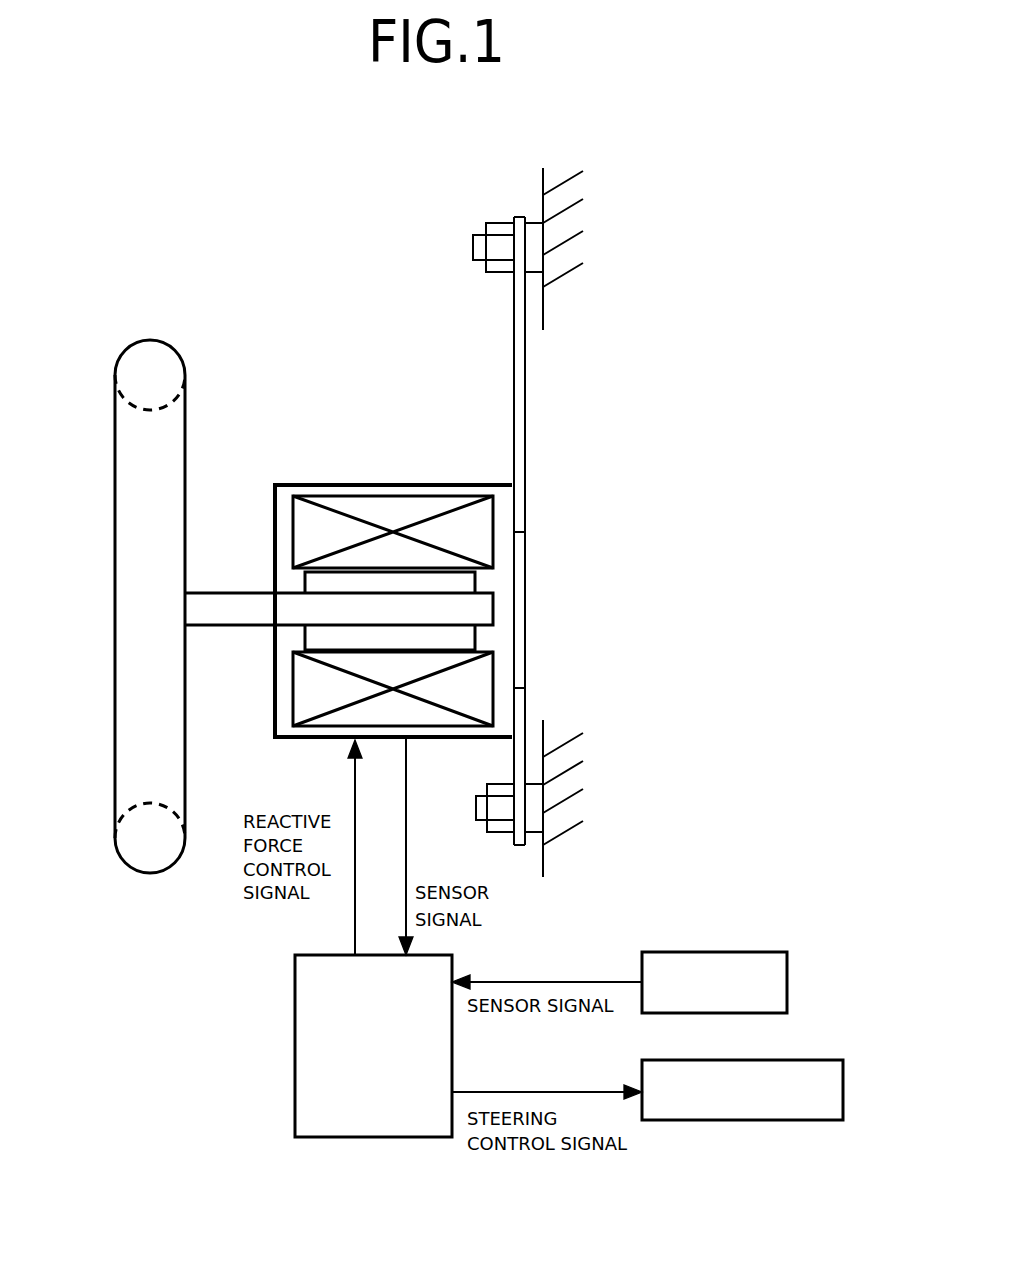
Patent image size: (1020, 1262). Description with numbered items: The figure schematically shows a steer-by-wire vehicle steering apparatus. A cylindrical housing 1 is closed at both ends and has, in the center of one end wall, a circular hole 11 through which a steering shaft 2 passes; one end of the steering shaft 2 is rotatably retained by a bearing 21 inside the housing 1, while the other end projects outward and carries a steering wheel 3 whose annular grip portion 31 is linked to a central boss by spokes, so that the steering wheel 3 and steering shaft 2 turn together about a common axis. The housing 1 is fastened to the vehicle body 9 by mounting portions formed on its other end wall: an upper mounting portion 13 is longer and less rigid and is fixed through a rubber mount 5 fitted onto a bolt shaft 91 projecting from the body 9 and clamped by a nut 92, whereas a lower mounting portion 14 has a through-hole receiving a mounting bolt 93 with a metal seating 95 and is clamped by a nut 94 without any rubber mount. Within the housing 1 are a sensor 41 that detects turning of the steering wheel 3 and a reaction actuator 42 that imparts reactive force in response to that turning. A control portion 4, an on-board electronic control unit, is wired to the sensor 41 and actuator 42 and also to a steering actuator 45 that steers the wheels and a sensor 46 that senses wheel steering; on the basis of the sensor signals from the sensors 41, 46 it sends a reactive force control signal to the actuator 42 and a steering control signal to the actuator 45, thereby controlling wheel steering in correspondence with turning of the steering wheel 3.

The housing 1 is at (320, 473).
The steering shaft 2 is at (497, 605).
The steering wheel 3 is at (113, 512).
The control portion 4 is at (290, 1090).
The rubber mount 5 is at (534, 217).
The body 9 is at (591, 258).
The circular hole 11 is at (268, 597).
The mounting portion 13 is at (518, 385).
The mounting portion 14 is at (520, 735).
The bearing 21 is at (450, 578).
The annular grip portion 31 is at (147, 367).
The sensor 41 is at (467, 682).
The actuator 42 is at (375, 508).
The actuator 45 is at (800, 1058).
The sensor 46 is at (710, 950).
The bolt shaft 91 is at (473, 247).
The nut 92 is at (497, 273).
The mounting bolt 93 is at (473, 807).
The nut 94 is at (497, 788).
The metal seating 95 is at (537, 825).